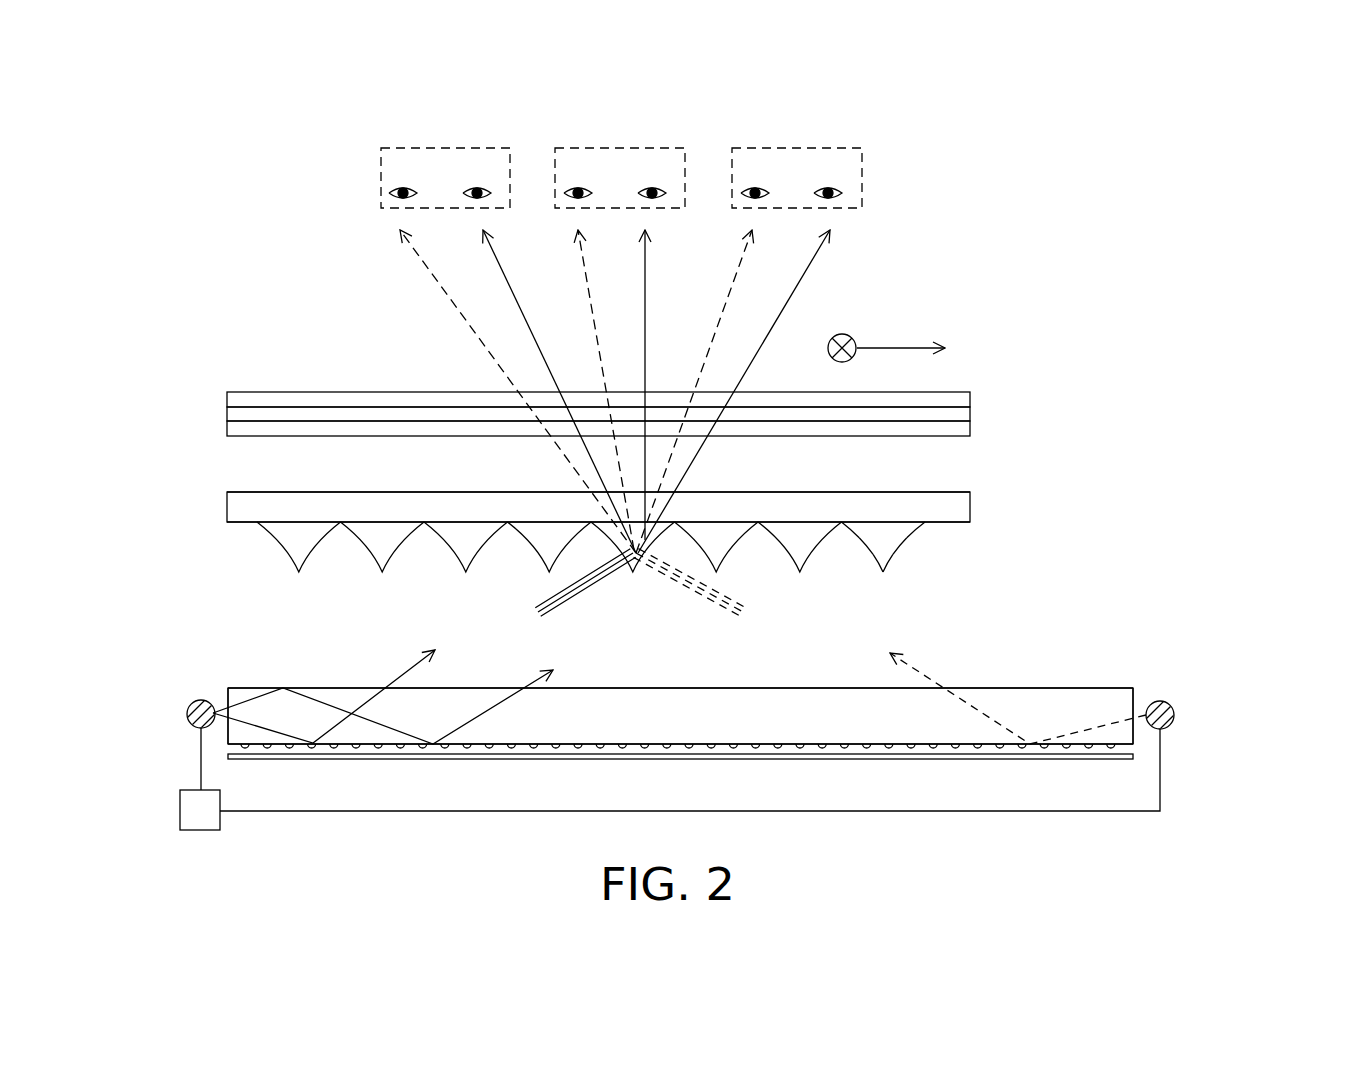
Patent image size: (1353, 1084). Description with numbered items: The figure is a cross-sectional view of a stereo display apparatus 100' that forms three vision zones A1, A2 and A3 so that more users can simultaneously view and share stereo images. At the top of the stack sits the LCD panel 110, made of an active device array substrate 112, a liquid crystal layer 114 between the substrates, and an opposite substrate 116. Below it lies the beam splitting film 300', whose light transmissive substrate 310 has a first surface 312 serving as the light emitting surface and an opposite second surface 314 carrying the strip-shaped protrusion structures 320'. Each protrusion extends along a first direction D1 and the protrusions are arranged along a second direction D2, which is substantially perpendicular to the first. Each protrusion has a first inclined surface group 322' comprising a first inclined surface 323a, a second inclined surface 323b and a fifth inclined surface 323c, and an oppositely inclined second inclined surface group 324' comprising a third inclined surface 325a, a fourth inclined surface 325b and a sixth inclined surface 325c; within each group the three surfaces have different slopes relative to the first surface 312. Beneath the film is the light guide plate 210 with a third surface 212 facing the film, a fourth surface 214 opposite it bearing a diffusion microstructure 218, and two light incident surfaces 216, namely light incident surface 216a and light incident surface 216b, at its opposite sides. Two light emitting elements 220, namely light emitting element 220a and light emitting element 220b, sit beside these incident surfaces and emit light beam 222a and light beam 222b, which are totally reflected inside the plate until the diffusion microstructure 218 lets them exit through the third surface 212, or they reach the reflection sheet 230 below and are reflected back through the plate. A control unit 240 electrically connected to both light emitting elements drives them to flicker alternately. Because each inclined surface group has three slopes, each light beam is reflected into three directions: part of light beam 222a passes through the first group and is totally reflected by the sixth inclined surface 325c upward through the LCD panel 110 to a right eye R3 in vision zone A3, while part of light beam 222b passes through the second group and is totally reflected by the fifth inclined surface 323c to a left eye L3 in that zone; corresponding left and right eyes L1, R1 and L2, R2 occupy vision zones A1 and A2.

The stereo display apparatus 100' is at (1201, 886).
The liquid crystal display panel 110 is at (668, 409).
The active device array substrate 112 is at (972, 430).
The liquid crystal layer 114 is at (972, 414).
The opposite substrate 116 is at (972, 396).
The light guide plate 210 is at (683, 741).
The third surface 212 is at (1083, 687).
The fourth surface 214 is at (943, 748).
The light incident surfaces 216 is at (683, 701).
The light incident surface 216a is at (226, 699).
The light incident surface 216b is at (1137, 734).
The diffusion microstructure 218 is at (873, 748).
The light emitting elements 220 is at (697, 720).
The light emitting element 220a is at (187, 714).
The light emitting element 220b is at (1175, 716).
The light beam 222a is at (252, 697).
The light beam 222b is at (688, 590).
The reflection sheet 230 is at (1000, 760).
The control unit 240 is at (190, 811).
The beam splitting film 300' is at (657, 565).
The light transmissive substrate 310 is at (933, 499).
The first surface 312 is at (768, 491).
The second surface 314 is at (377, 523).
The strip-shaped protrusion structure 320' is at (629, 604).
The first inclined surface group 322' is at (827, 604).
The first inclined surface 323a is at (850, 532).
The second inclined surface 323b is at (880, 597).
The fifth inclined surface 323c is at (870, 548).
The second inclined surface group 324' is at (980, 604).
The third inclined surface 325a is at (915, 532).
The fourth inclined surface 325b is at (927, 597).
The sixth inclined surface 325c is at (905, 547).
The vision zone A1 is at (444, 148).
The vision zone A2 is at (795, 148).
The vision zone A3 is at (619, 148).
The left eye L1 is at (403, 175).
The right eye R1 is at (477, 175).
The left eye L2 is at (755, 175).
The right eye R2 is at (828, 175).
The left eye L3 is at (578, 175).
The right eye R3 is at (652, 175).
The first direction D1 is at (841, 334).
The second direction D2 is at (921, 347).